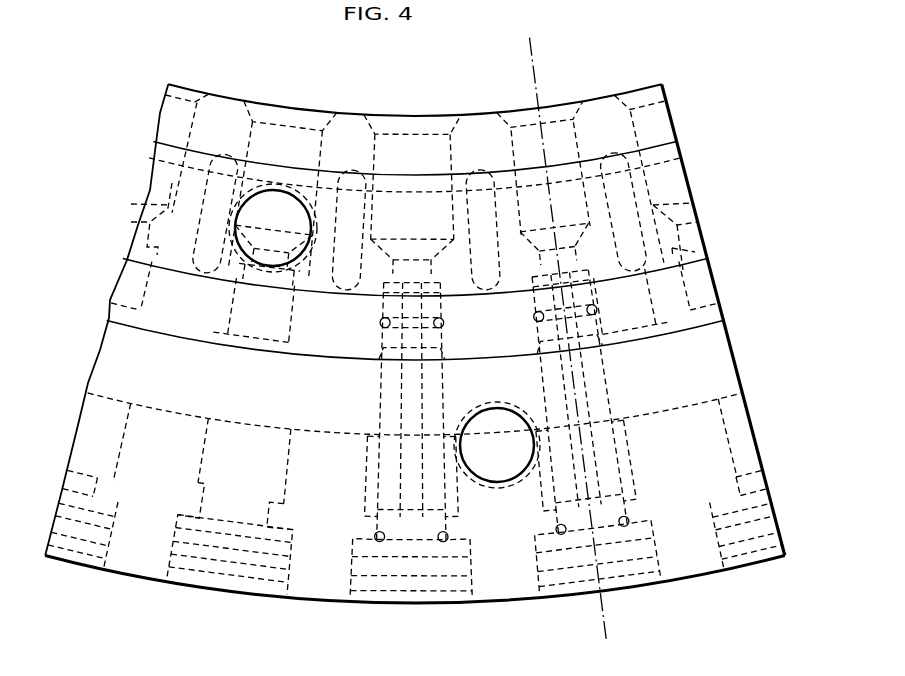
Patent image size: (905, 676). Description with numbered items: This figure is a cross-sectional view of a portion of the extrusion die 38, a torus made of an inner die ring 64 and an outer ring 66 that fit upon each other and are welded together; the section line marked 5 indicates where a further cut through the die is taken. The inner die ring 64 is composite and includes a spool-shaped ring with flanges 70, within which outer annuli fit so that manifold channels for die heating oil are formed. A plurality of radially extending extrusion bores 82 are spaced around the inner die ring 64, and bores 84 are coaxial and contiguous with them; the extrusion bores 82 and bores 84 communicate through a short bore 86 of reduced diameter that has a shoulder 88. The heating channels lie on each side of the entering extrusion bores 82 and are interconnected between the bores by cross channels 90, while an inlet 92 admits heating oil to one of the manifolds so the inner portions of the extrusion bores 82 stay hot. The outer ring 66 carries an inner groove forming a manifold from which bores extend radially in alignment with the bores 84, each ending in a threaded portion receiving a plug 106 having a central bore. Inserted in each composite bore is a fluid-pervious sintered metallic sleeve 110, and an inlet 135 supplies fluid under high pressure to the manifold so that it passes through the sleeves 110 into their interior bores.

The extrusion die 38 is at (733, 316).
The inner die ring 64 is at (672, 102).
The outer ring 66 is at (737, 352).
The flanges 70 is at (665, 283).
The extrusion bores 82 is at (278, 134).
The bores 84 is at (234, 310).
The short bore of reduced diameter 86 is at (365, 298).
The shoulder 88 is at (440, 300).
The cross channels 90 is at (200, 189).
The inlet 92 is at (290, 224).
The plug 106 is at (383, 586).
The metallic sleeve 110 is at (441, 386).
The inlet 135 is at (514, 464).
The section line 5- 5 is at (531, 50).